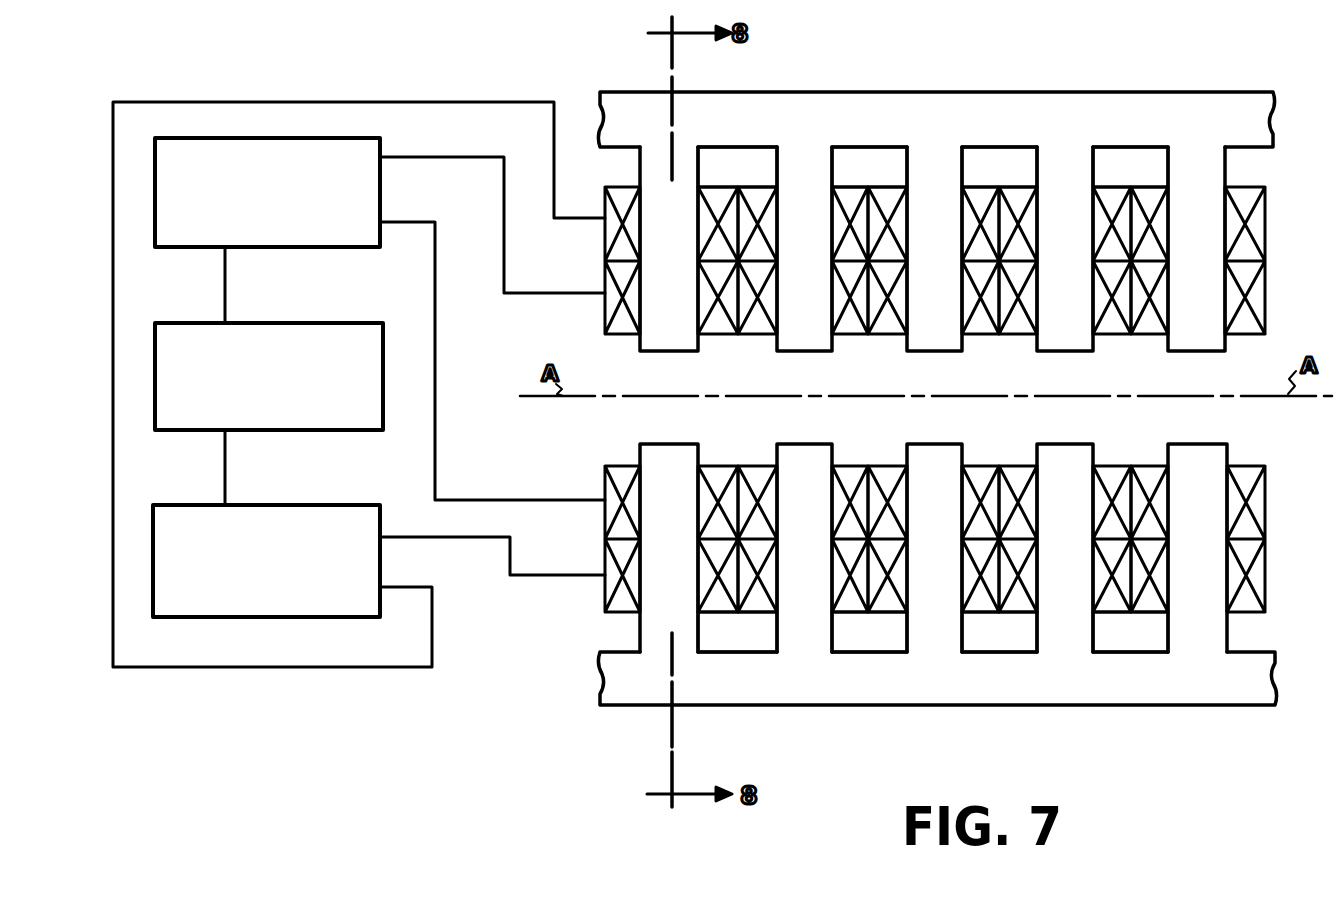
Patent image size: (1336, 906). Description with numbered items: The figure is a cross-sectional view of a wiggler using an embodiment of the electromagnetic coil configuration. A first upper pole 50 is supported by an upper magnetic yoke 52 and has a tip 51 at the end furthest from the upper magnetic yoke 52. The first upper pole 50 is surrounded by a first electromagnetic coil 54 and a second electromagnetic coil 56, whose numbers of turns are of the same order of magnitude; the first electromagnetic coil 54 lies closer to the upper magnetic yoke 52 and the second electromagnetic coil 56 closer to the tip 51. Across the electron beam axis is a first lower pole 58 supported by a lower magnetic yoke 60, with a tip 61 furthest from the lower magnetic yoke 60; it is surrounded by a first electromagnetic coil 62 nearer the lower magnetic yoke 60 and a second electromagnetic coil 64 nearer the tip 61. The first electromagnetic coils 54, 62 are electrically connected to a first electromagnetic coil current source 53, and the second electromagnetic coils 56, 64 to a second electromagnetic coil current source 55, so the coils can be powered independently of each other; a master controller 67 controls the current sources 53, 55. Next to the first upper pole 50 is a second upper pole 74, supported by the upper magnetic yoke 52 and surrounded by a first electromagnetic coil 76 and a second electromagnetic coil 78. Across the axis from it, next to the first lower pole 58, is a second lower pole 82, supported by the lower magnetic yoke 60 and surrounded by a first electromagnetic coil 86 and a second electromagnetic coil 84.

The first upper pole 50 is at (936, 214).
The tip 51 is at (680, 267).
The upper magnetic yoke 52 is at (936, 95).
The first electromagnetic coil current source 53 is at (274, 599).
The first electromagnetic coil 54 is at (653, 256).
The second electromagnetic coil current source 55 is at (274, 235).
The second electromagnetic coil 56 is at (653, 276).
The first lower pole 58 is at (937, 579).
The lower magnetic yoke 60 is at (937, 704).
The tip 61 is at (669, 526).
The first electromagnetic coil 62 is at (659, 609).
The second electromagnetic coil 64 is at (658, 589).
The master controller 67 is at (284, 408).
The second upper pole 74 is at (825, 267).
The first electromagnetic coil 76 is at (830, 218).
The second electromagnetic coil 78 is at (830, 287).
The second lower pole 82 is at (811, 526).
The second electromagnetic coil 84 is at (818, 510).
The first electromagnetic coil 86 is at (818, 580).